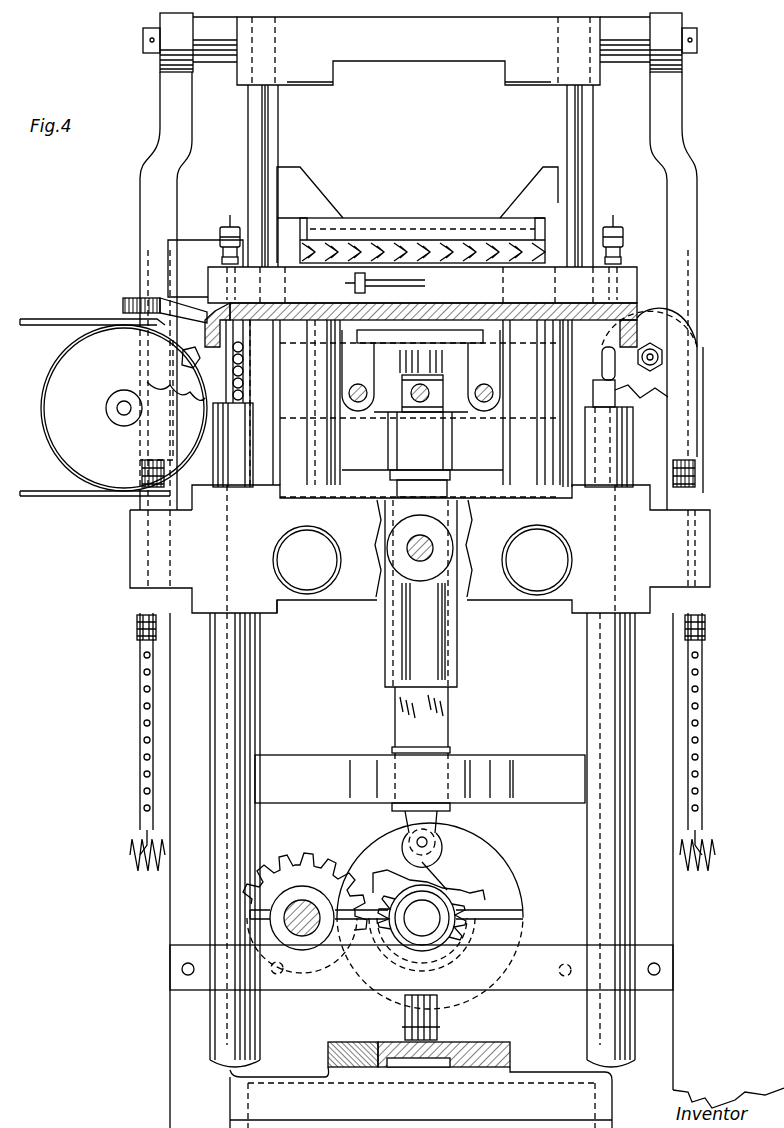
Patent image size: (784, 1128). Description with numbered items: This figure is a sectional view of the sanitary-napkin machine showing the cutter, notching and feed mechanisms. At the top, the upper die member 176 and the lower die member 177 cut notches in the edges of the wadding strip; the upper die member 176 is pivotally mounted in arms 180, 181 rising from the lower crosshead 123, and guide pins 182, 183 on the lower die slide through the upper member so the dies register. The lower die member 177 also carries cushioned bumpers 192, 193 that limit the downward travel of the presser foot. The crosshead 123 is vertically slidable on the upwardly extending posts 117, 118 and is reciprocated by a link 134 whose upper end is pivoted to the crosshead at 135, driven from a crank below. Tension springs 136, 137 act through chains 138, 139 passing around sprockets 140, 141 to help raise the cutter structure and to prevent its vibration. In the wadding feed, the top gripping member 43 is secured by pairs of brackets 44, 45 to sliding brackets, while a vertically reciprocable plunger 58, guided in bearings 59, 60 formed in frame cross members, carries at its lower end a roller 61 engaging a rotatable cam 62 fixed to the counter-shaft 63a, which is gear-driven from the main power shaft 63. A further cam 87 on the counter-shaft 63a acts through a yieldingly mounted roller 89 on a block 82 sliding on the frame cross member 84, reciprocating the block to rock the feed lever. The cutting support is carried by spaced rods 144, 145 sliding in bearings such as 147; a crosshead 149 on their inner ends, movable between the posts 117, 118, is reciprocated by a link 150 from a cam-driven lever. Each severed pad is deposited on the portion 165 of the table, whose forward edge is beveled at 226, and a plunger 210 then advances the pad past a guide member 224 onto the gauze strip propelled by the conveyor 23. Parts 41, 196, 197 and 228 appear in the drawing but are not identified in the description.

The conveyor 23 is at (50, 325).
The cutter blade 41 is at (410, 218).
The top plate or gripping member 43 is at (346, 218).
The brackets 44 is at (325, 192).
The brackets 45 is at (525, 192).
The plunger 58 is at (440, 360).
The bearing 59 is at (410, 452).
The bearing 60 is at (460, 760).
The roller 61 is at (436, 846).
The cam 62 is at (430, 878).
The main power shaft 63 is at (302, 900).
The counter-shaft 63a is at (430, 908).
The block 82 is at (415, 1062).
The cross member 84 is at (328, 1052).
The cam 87 is at (515, 918).
The roller 89 is at (405, 1017).
The post 117 is at (205, 905).
The post 118 is at (620, 912).
The crosshead 123 is at (332, 597).
The link 134 is at (458, 650).
The pivotal connection 135 is at (420, 560).
The tension spring 136 is at (130, 848).
The tension spring 137 is at (715, 850).
The chain 138 is at (142, 700).
The chain 139 is at (715, 722).
The sprocket 140 is at (228, 378).
The sprocket 141 is at (632, 400).
The rod 144 is at (347, 393).
The rod 145 is at (490, 395).
The bearing 147 is at (355, 357).
The crosshead 149 is at (447, 415).
The link 150 is at (403, 415).
The portion of the table 165 is at (450, 312).
The upper die member 176 is at (390, 62).
The lower die member 177 is at (438, 272).
The bracket or arm 180 is at (165, 74).
The bracket or arm 181 is at (683, 100).
The guide pin 182 is at (248, 142).
The guide pin 183 is at (583, 135).
The cushioned bumper 192 is at (230, 213).
The cushioned bumper 193 is at (614, 224).
The left guide block 196 is at (280, 570).
The right guide block 197 is at (563, 573).
The plunger 210 is at (345, 283).
The guide member 224 is at (125, 298).
The beveled edge portion 226 is at (235, 330).
The curved guard 228 is at (520, 330).